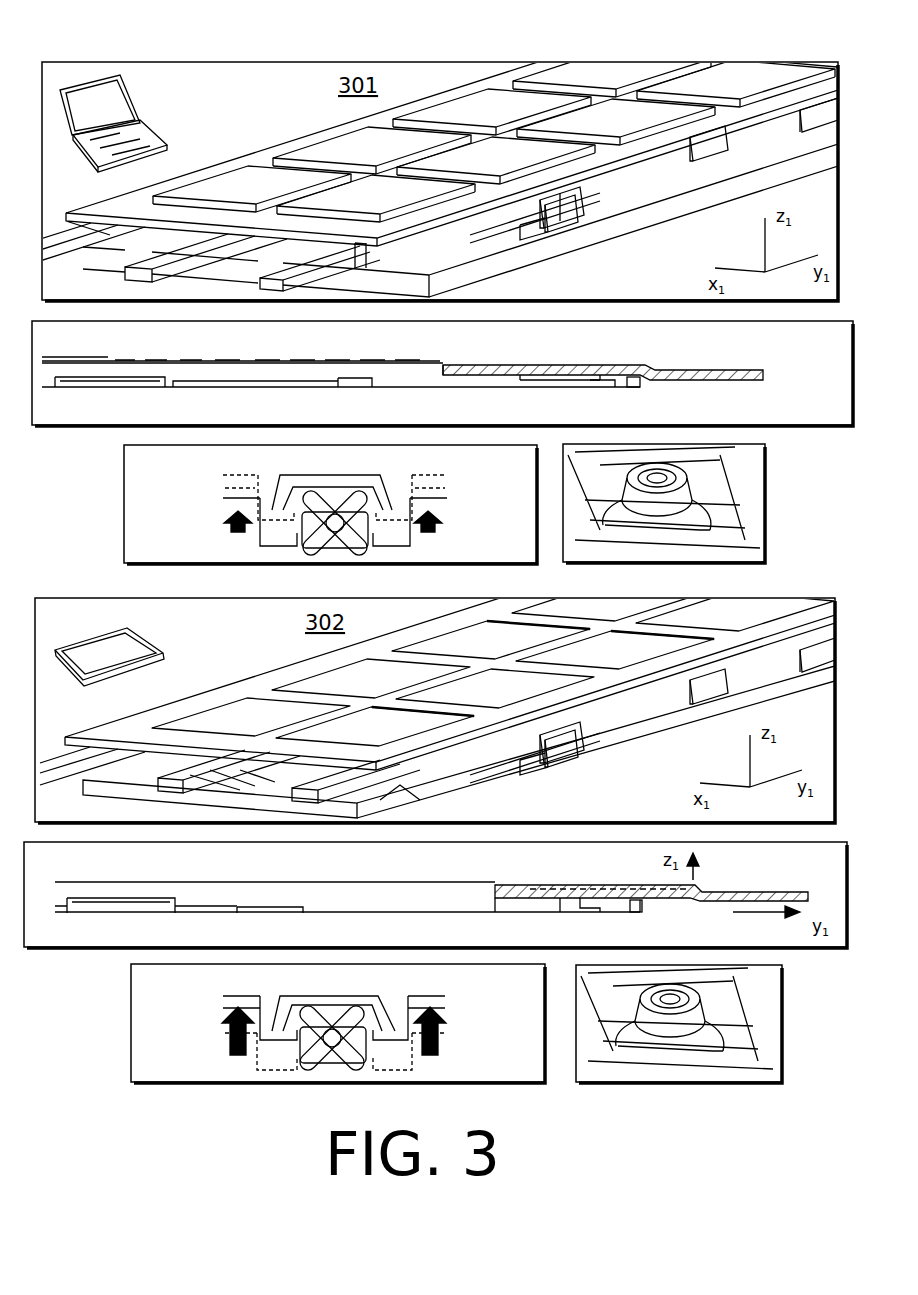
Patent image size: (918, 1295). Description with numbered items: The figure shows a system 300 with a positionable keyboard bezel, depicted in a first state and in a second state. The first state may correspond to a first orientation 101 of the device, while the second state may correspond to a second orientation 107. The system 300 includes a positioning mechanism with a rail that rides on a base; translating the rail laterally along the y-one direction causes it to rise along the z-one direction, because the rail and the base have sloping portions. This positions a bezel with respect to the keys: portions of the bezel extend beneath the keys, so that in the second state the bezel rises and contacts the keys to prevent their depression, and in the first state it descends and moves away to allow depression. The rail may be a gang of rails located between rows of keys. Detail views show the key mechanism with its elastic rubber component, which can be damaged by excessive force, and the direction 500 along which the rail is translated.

The system 300 is at (126, 38).
The orientation 101 is at (140, 110).
The orientation 107 is at (105, 635).
The retraction direction 500 is at (586, 884).